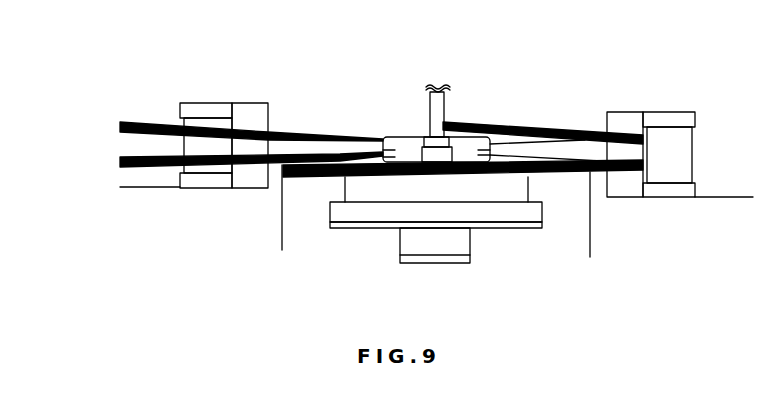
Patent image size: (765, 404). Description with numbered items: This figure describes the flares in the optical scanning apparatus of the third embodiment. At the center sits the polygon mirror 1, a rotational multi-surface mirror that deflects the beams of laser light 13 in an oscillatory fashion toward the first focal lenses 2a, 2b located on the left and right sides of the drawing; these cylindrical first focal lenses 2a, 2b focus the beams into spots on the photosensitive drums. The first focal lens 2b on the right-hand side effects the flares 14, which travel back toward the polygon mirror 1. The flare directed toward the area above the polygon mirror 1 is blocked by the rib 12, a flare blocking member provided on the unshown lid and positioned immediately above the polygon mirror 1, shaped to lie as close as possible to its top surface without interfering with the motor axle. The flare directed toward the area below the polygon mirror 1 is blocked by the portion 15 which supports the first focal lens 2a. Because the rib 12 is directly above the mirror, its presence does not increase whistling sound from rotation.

The polygon mirror 1 is at (403, 137).
The first focal lens 2a is at (248, 103).
The first focal lens 2b is at (627, 108).
The rib 12 is at (448, 103).
The beams of laser light 13 is at (313, 150).
The flares 14 is at (525, 163).
The portion supporting the first focal lens 15 is at (283, 185).